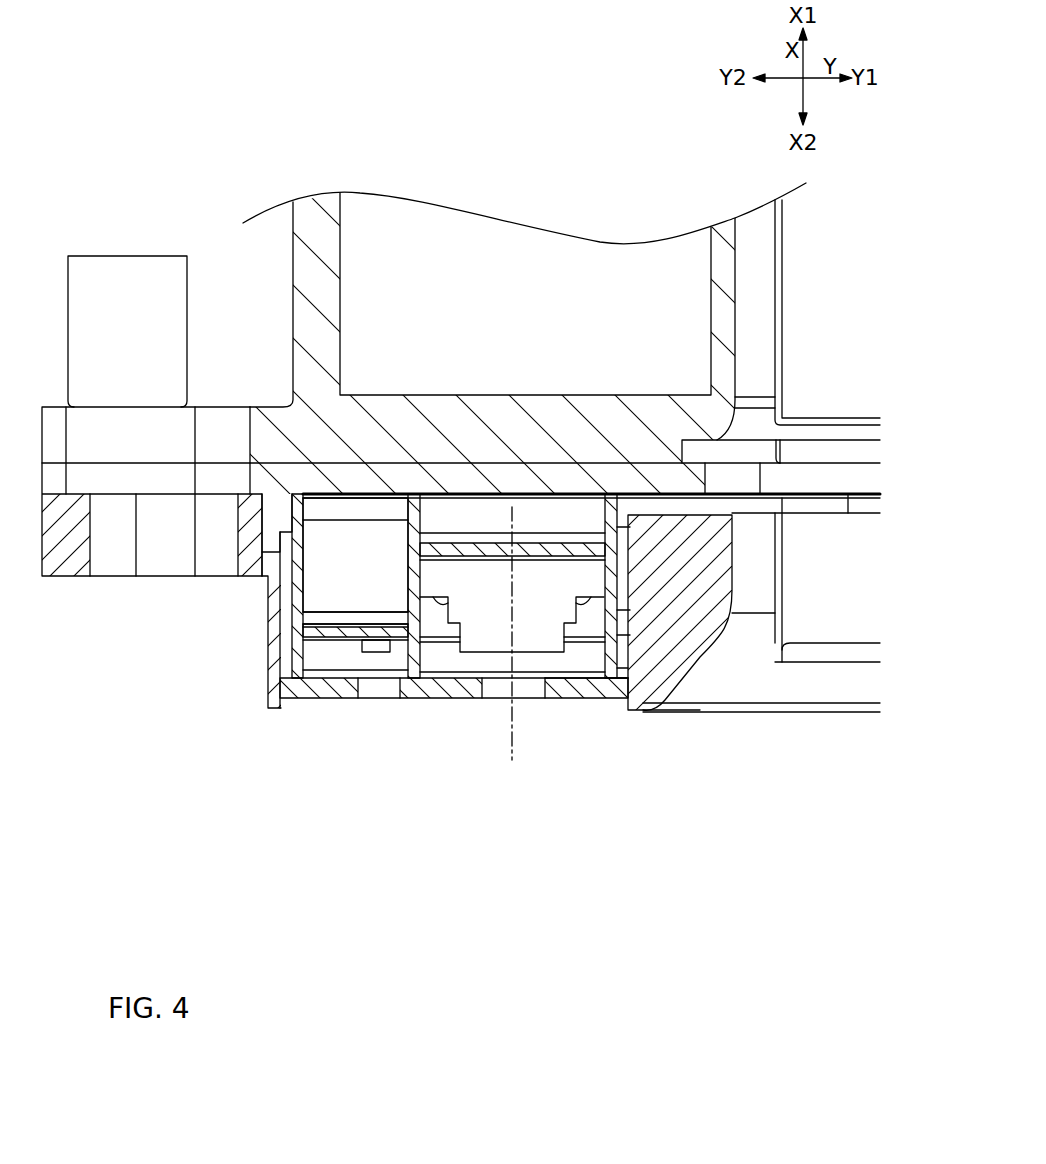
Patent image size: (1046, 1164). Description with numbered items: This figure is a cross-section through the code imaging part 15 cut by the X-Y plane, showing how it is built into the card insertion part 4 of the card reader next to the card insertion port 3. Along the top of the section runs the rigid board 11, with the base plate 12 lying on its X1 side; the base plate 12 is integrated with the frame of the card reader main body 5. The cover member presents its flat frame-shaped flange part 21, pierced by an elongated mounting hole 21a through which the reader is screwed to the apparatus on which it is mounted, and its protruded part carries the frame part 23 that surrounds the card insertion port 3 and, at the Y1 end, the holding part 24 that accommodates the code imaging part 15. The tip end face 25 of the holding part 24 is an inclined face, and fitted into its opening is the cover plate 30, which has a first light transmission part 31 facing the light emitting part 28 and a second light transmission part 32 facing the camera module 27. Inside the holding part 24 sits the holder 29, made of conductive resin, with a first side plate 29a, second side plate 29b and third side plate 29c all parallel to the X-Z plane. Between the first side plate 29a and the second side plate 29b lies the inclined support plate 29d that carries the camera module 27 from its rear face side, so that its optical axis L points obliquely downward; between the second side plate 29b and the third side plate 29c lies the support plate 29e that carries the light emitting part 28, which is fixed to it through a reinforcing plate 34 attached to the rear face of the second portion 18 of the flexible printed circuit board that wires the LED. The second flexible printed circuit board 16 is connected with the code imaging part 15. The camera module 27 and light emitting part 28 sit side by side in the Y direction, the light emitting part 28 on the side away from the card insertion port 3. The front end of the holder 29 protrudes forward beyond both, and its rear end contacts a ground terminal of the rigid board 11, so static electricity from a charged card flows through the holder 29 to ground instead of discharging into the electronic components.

The card insertion port 3 is at (693, 649).
The card insertion part 4 is at (754, 669).
The card reader main body 5 is at (519, 340).
The rigid board 11 is at (462, 482).
The base plate 12 is at (262, 447).
The code imaging part 15 is at (474, 624).
The second flexible printed circuit board 16 is at (484, 551).
The second portion 18 is at (332, 642).
The flange part 21 is at (150, 454).
The mounting hole 21a is at (95, 555).
The frame part 23 is at (653, 710).
The holding part 24 is at (268, 693).
The tip end face 25 is at (454, 744).
The camera module 27 is at (472, 638).
The light emitting part 28 is at (373, 645).
The holder 29 is at (524, 519).
The first side plate 29a is at (611, 497).
The second side plate 29b is at (418, 497).
The third side plate 29c is at (297, 495).
The support plate 29d is at (553, 548).
The support plate 29e is at (327, 617).
The cover plate 30 is at (578, 690).
The first light transmission part 31 is at (375, 688).
The second light transmission part 32 is at (495, 688).
The reinforcing plate 34 is at (330, 627).